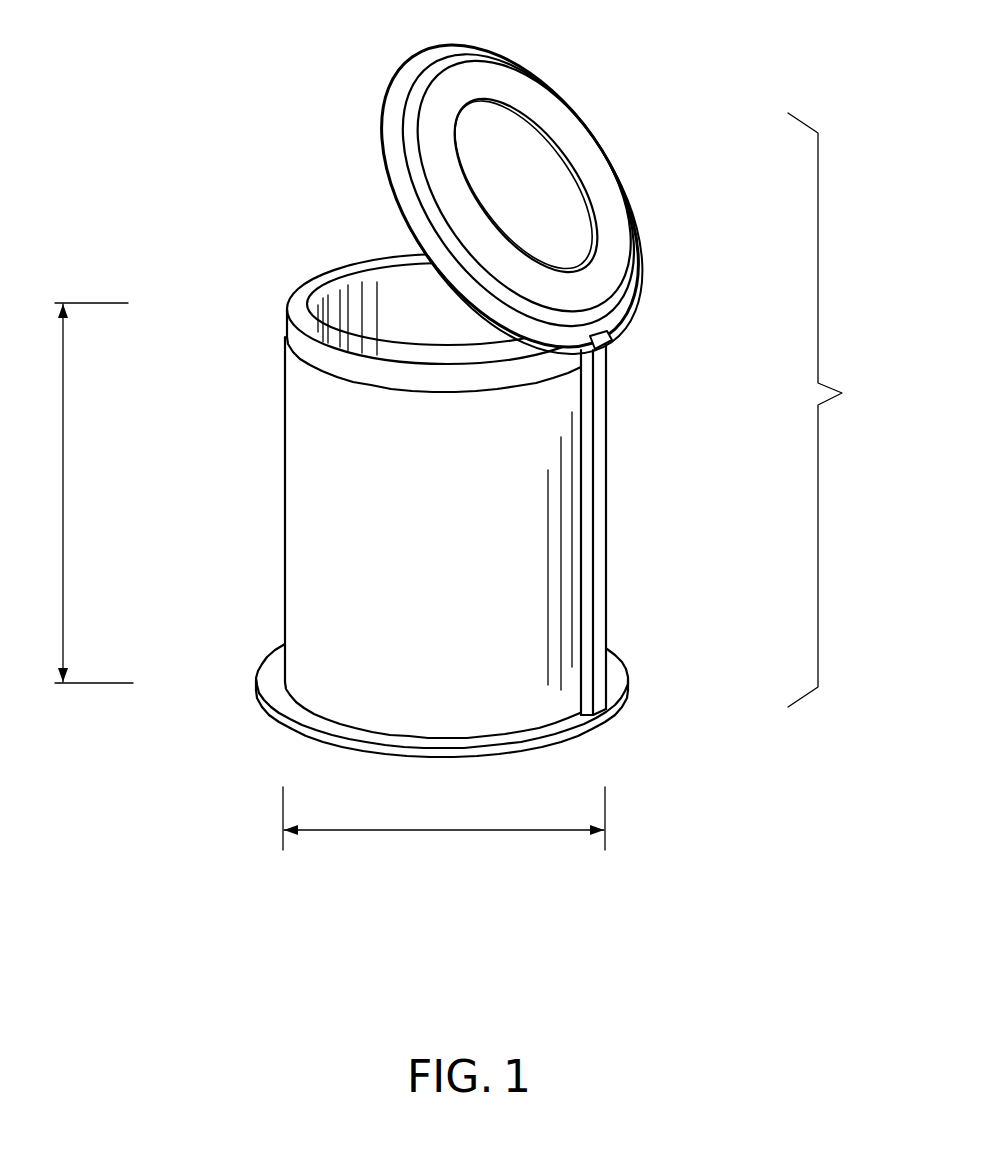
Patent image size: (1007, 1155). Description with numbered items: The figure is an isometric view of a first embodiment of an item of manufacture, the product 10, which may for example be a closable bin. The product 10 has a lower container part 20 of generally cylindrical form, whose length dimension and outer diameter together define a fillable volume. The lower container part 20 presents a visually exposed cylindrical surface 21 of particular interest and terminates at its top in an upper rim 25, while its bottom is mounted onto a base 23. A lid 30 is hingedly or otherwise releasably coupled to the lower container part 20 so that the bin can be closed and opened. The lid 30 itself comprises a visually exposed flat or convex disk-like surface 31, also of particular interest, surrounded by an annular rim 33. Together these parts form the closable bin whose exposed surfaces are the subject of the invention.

The product 10 is at (840, 410).
The lower container part 20 is at (631, 504).
The cylindrical surface 21 is at (557, 640).
The base 23 is at (553, 728).
The upper rim 25 is at (288, 297).
The lid 30 is at (630, 113).
The disk-like surface 31 is at (538, 245).
The annular rim 33 is at (607, 288).